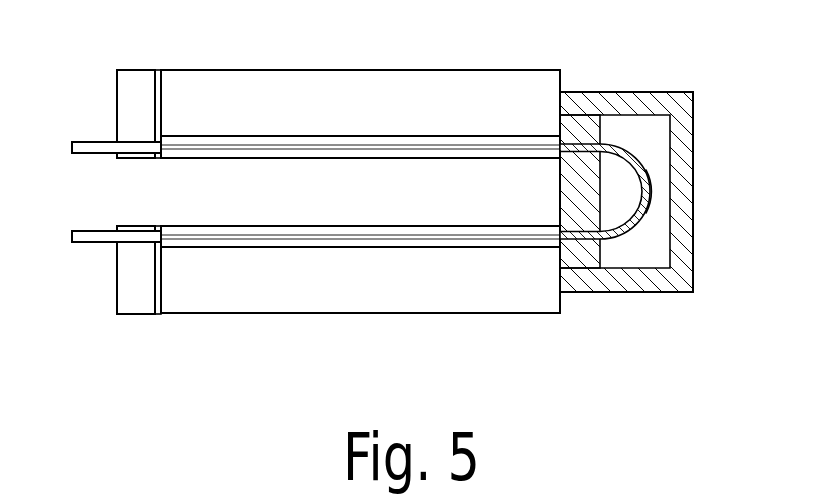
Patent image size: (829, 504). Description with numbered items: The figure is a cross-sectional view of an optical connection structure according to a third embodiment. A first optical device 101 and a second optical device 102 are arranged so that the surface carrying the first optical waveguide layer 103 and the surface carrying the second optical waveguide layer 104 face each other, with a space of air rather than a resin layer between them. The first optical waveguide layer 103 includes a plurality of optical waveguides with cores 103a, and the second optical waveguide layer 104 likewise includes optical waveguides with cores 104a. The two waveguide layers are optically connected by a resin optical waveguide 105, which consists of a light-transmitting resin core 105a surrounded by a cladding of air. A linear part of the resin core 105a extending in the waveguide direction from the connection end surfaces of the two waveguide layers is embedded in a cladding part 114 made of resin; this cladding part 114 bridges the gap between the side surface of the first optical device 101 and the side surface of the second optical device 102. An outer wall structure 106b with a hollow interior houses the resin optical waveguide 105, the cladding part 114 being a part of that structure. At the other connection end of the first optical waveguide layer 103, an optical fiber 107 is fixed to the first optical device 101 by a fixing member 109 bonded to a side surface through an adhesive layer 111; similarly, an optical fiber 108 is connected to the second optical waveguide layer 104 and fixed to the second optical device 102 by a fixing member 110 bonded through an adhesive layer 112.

The first optical device 101 is at (428, 313).
The second optical device 102 is at (428, 70).
The first optical waveguide layer 103 is at (351, 243).
The cores of the first optical waveguide layer 103a is at (498, 237).
The second optical waveguide layer 104 is at (356, 140).
The cores of the second optical waveguide layer 104a is at (502, 148).
The resin optical waveguide 105 is at (612, 142).
The resin core 105a is at (649, 190).
The outer wall structure 106b is at (694, 240).
The optical fiber 107 is at (92, 243).
The optical fiber 108 is at (92, 141).
The fixing member 109 is at (118, 302).
The fixing member 110 is at (118, 82).
The adhesive layer 111 is at (157, 314).
The adhesive layer 112 is at (157, 69).
The cladding part 114 is at (580, 253).